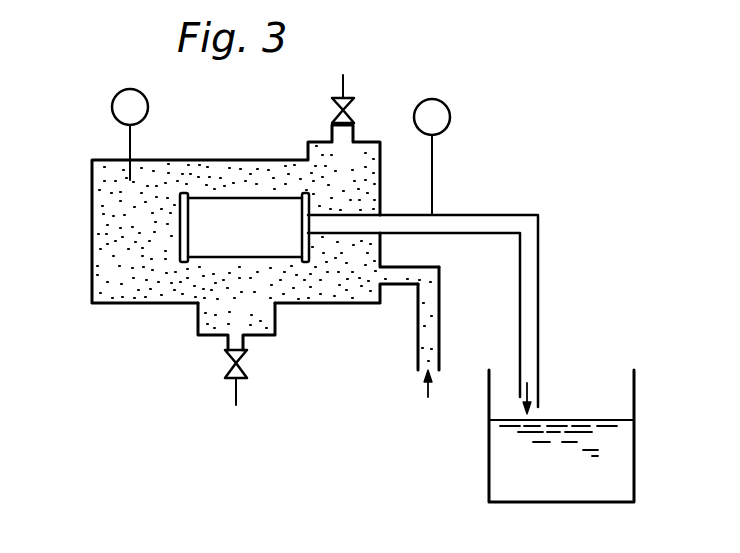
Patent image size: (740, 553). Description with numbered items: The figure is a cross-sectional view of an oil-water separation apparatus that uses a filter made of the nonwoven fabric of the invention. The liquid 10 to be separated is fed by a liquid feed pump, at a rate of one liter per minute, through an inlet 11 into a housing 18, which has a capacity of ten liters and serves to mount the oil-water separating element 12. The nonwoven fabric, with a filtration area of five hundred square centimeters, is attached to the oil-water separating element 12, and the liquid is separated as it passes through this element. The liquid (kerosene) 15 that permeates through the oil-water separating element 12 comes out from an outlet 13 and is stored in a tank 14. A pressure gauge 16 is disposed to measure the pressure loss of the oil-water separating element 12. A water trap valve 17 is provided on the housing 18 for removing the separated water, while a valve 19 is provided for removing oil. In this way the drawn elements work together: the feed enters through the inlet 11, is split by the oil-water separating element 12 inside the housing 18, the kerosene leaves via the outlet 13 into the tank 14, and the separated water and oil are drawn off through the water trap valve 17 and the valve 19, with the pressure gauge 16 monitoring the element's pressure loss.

The liquid to be separated 10 is at (120, 236).
The inlet 11 is at (431, 346).
The oil-water separating element 12 is at (228, 197).
The outlet 13 is at (437, 317).
The tank 14 is at (634, 453).
The permeated liquid (kerosene) 15 is at (571, 491).
The pressure gauge 16 is at (148, 107).
The water trap valve 17 is at (248, 363).
The housing 18 is at (150, 305).
The valve for removing oil 19 is at (354, 110).